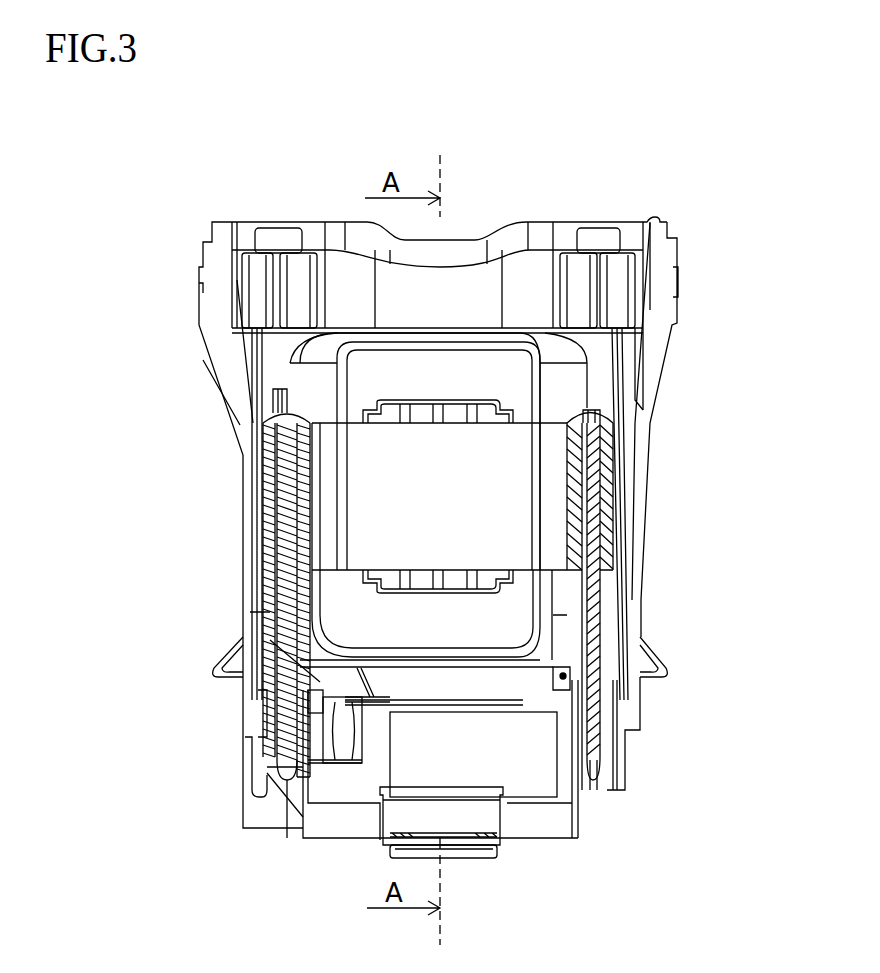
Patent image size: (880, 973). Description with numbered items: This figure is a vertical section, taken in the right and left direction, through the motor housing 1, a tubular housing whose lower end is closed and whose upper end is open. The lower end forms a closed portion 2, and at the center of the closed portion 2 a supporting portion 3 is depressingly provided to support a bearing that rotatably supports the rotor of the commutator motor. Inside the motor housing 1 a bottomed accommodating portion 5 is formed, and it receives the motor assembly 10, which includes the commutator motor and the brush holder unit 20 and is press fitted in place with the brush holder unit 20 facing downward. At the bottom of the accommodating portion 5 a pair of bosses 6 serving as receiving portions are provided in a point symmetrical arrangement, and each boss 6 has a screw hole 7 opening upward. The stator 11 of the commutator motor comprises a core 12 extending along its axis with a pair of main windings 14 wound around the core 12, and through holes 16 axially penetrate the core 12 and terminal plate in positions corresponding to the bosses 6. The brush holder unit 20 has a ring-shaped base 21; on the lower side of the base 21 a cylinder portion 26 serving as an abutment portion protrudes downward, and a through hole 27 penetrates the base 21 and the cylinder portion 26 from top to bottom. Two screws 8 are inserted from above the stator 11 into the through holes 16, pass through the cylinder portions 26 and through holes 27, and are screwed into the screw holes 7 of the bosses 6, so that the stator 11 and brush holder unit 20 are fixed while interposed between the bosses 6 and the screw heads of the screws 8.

The motor housing 1 is at (663, 466).
The closed portion 2 is at (563, 825).
The supporting portion 3 is at (483, 815).
The accommodating portion 5 is at (600, 388).
The boss 6 is at (268, 722).
The screw hole 7 is at (290, 770).
The screw 8 is at (265, 462).
The motor assembly 10 is at (541, 315).
The stator 11 is at (602, 347).
The core 12 is at (610, 490).
The main winding 14 is at (320, 378).
The through hole 16 is at (262, 510).
The brush holder unit 20 is at (352, 727).
The base 21 is at (530, 690).
The cylinder portion 26 is at (272, 600).
The through hole 27 is at (283, 612).